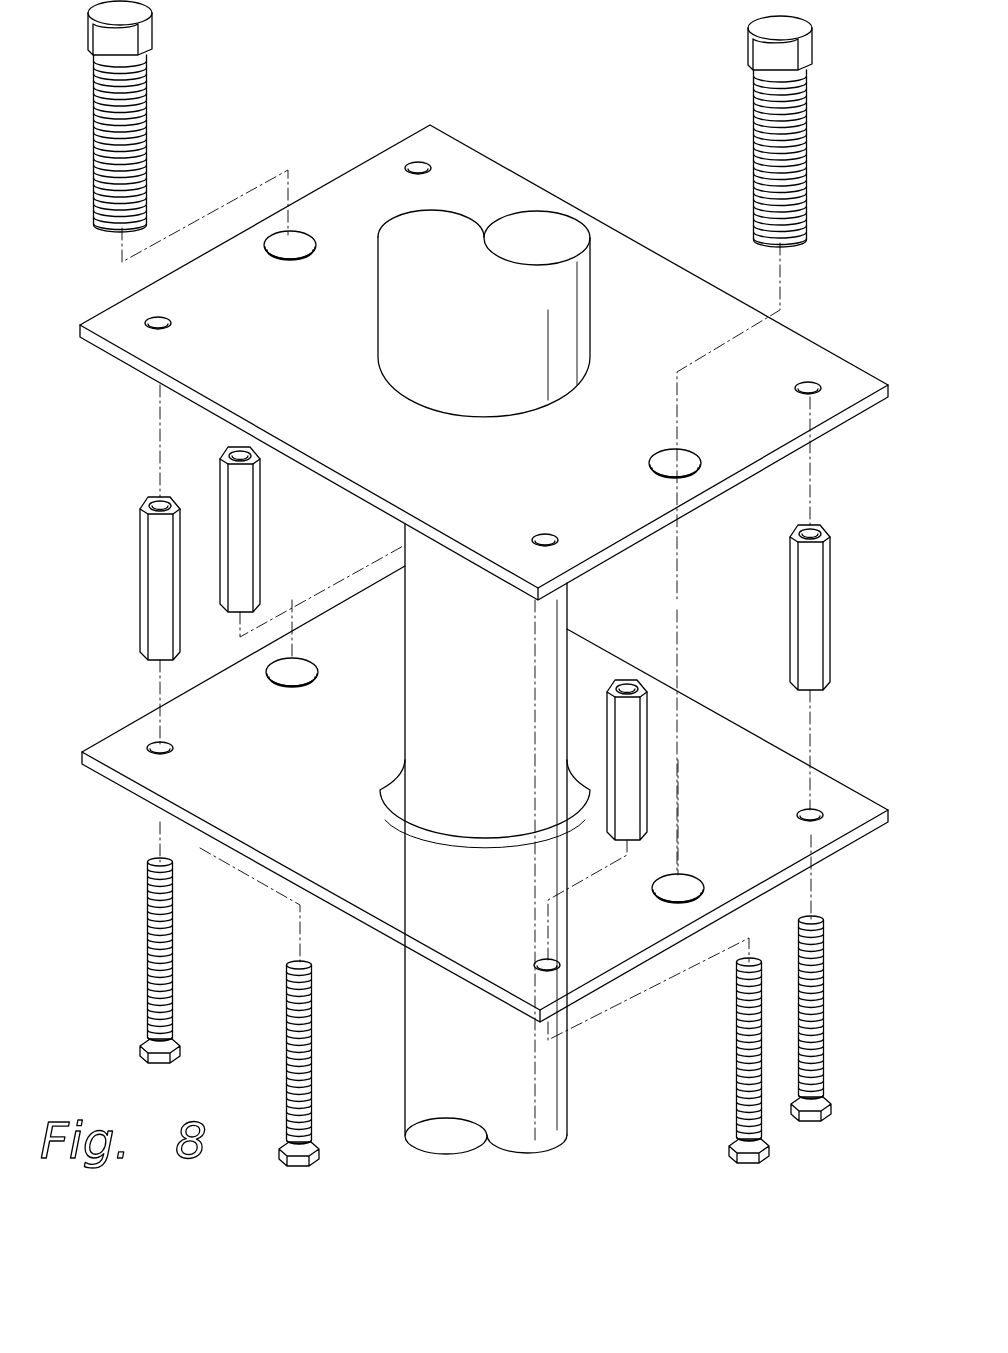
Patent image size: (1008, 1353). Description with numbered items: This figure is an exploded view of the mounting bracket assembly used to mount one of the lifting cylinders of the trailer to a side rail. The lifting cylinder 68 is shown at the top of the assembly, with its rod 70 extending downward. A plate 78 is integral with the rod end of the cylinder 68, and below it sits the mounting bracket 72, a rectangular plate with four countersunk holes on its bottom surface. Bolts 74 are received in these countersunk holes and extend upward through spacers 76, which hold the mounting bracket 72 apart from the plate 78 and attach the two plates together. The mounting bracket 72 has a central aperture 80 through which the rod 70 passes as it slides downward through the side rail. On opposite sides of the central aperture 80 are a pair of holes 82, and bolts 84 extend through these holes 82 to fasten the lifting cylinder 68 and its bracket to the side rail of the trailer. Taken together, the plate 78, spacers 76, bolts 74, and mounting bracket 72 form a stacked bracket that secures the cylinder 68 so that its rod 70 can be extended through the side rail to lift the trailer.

The lifting cylinder 68 is at (597, 305).
The rod 70 is at (405, 652).
The mounting bracket 72 is at (485, 794).
The bolts 74 is at (290, 1057).
The spacers 76 is at (142, 606).
The plate 78 is at (823, 335).
The central aperture 80 is at (386, 806).
The holes 82 is at (278, 688).
The bolts 84 is at (152, 14).